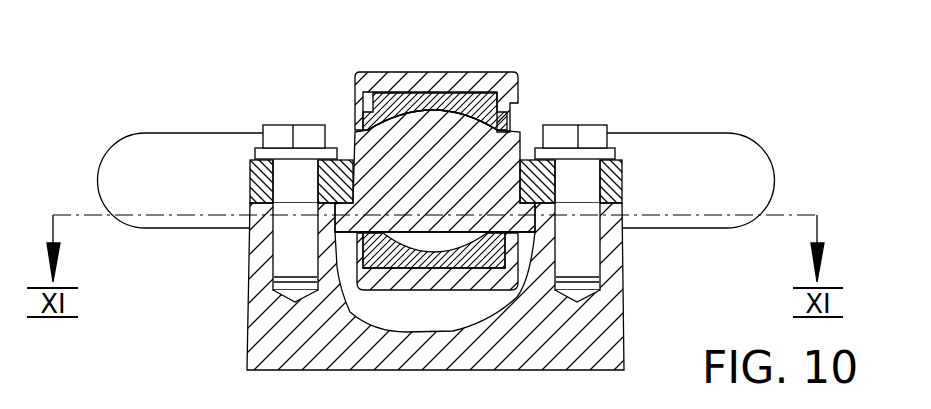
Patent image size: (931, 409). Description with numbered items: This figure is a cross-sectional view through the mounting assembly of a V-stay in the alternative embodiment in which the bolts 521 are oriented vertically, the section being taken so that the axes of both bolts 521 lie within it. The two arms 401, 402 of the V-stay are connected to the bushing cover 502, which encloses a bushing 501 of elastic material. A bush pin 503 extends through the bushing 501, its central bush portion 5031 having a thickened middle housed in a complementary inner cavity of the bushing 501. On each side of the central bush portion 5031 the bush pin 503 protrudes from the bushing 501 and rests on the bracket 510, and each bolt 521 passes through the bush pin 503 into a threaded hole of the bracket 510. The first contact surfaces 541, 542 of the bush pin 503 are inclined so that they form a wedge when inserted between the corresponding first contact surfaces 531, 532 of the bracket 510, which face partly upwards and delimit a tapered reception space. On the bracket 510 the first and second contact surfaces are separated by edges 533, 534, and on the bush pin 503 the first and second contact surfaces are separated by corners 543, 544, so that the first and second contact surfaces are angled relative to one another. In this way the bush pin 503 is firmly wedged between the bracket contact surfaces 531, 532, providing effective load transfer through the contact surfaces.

The arm 401 is at (685, 155).
The arm 402 is at (192, 155).
The bushing 501 is at (397, 112).
The bushing cover 502 is at (372, 75).
The bush pin 503 is at (473, 145).
The central bush portion 5031 is at (468, 122).
The bracket 510 is at (280, 332).
The bolt 521 is at (292, 218).
The first contact surface 531 is at (522, 198).
The first contact surface 532 is at (347, 158).
The edge 533 is at (553, 188).
The edge 534 is at (313, 190).
The first contact surface 541 is at (605, 250).
The first contact surface 542 is at (297, 264).
The corner 543 is at (578, 262).
The corner 544 is at (300, 205).